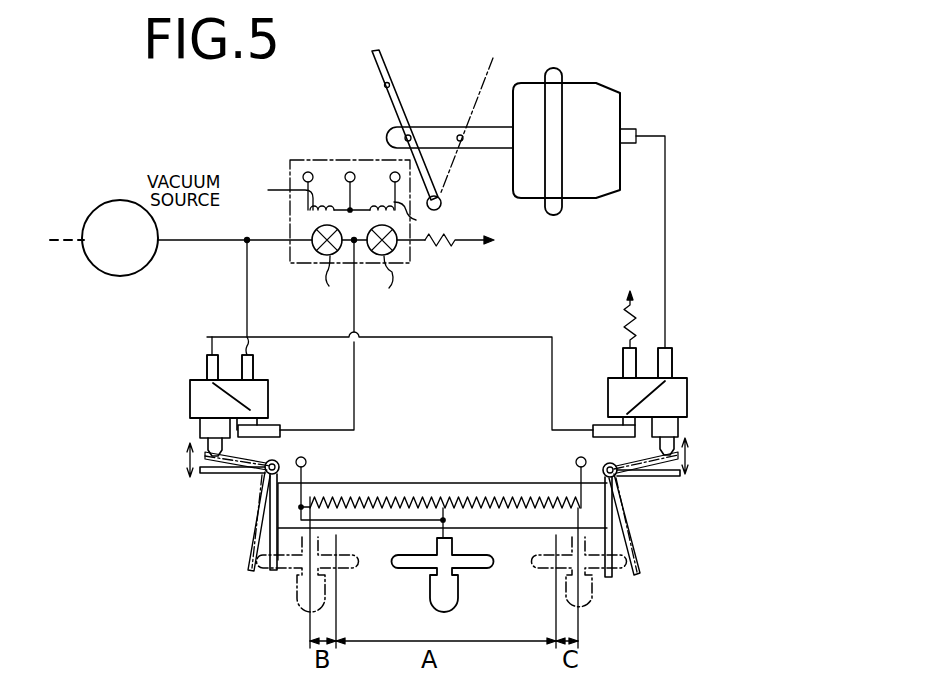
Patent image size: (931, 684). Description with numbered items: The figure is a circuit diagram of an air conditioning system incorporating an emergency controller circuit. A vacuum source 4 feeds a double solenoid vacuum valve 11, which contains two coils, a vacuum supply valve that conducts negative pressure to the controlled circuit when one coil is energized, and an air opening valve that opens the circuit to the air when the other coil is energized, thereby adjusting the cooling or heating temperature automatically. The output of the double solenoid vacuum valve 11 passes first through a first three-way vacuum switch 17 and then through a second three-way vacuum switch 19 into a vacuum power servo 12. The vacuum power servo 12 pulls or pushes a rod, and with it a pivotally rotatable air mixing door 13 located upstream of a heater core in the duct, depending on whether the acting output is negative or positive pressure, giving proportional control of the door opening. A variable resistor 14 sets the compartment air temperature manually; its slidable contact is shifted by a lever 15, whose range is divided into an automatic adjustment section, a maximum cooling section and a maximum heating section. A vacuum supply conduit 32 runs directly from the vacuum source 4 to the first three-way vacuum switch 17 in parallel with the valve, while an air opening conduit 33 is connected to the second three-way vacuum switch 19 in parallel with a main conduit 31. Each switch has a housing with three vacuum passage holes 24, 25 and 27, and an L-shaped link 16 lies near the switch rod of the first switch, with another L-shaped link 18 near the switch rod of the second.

The vacuum source 4 is at (120, 201).
The double solenoid vacuum valve 11 is at (336, 160).
The vacuum power servo 12 is at (584, 98).
The air mixing door 13 is at (382, 60).
The variable resistor 14 is at (403, 498).
The lever 15 is at (458, 598).
The L-shaped link 16 is at (254, 555).
The first three-way vacuum switch 17 is at (200, 403).
The L-shaped link 18 is at (640, 531).
The second three-way vacuum switch 19 is at (688, 390).
The vacuum passage hole 24 is at (275, 427).
The vacuum passage hole 25 is at (255, 363).
The vacuum passage hole 27 is at (206, 360).
The main conduit 31 is at (424, 338).
The vacuum supply conduit 32 is at (247, 313).
The air opening conduit 33 is at (624, 322).